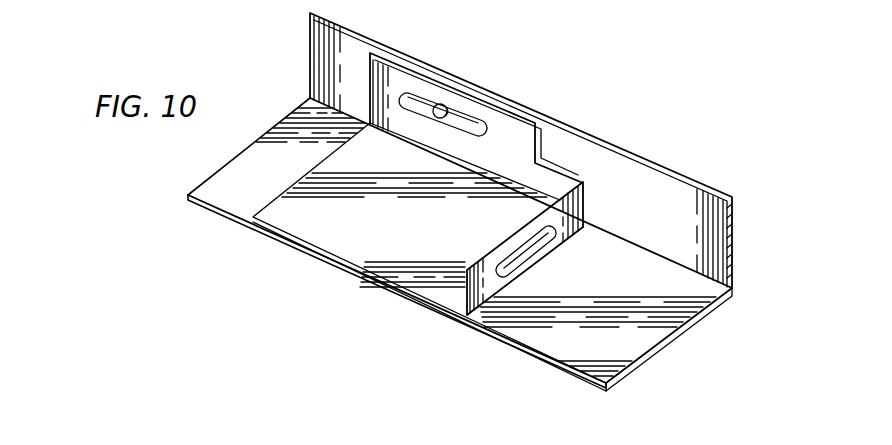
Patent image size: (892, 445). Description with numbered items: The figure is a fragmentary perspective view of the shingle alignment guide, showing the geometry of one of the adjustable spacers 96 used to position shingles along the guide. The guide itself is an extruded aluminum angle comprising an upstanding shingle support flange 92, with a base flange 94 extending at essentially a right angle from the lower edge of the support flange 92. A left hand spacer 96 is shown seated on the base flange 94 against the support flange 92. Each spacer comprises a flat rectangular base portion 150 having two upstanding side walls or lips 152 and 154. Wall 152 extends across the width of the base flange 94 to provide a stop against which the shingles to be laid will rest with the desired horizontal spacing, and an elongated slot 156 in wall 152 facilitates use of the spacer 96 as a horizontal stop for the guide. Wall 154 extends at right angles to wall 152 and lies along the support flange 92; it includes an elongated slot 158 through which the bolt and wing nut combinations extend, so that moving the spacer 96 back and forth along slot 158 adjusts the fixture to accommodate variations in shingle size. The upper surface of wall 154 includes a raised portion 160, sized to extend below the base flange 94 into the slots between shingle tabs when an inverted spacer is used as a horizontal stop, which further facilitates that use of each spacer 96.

The shingle support flange 92 is at (630, 175).
The base flange 94 is at (683, 298).
The adjustable spacer 96 is at (393, 273).
The base portion 150 is at (429, 208).
The side wall 152 is at (534, 248).
The side wall 154 is at (476, 130).
The elongated slot 156 is at (527, 249).
The elongated slot 158 is at (482, 134).
The raised portion 160 is at (437, 78).